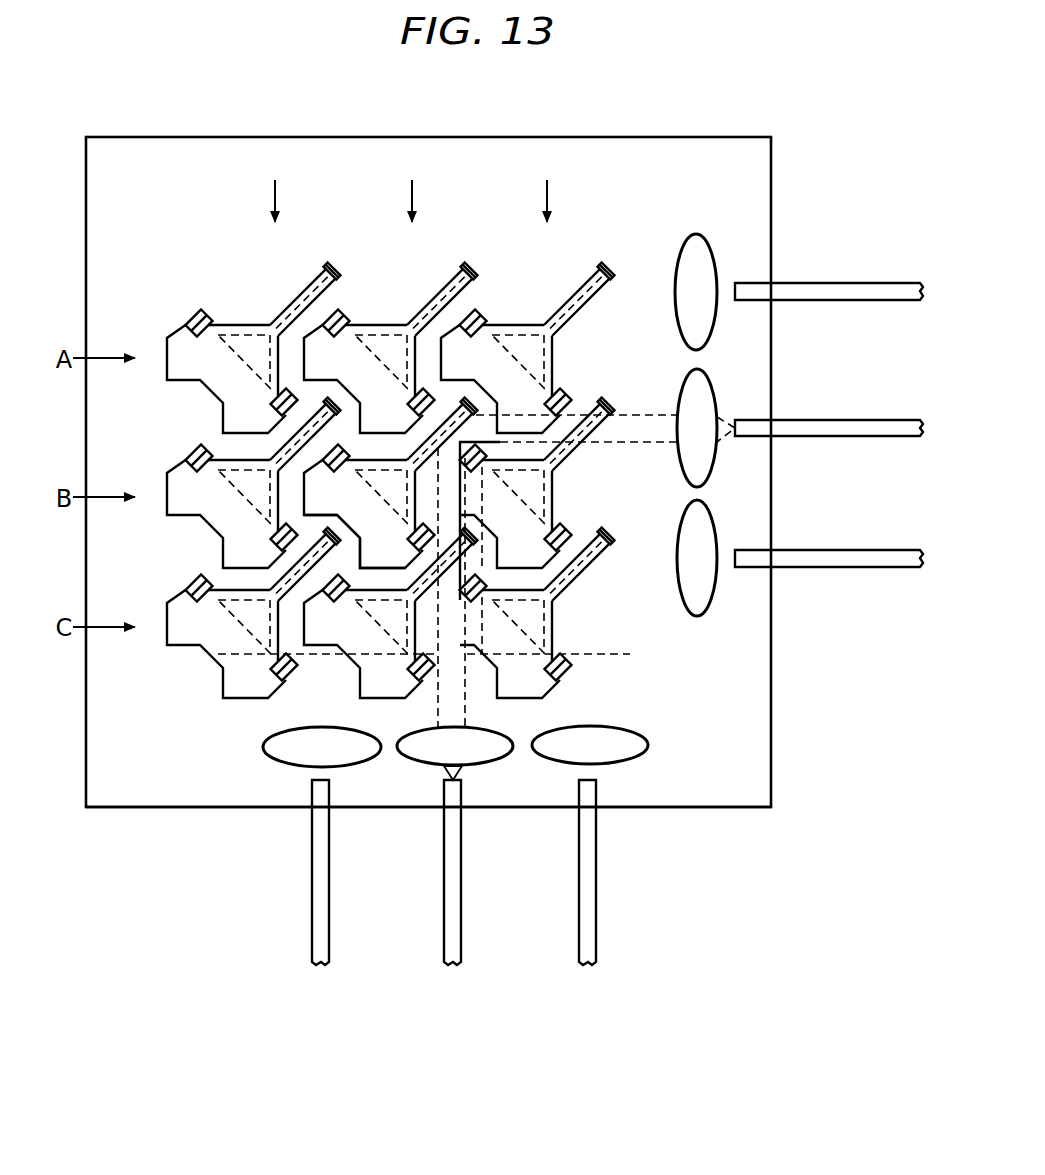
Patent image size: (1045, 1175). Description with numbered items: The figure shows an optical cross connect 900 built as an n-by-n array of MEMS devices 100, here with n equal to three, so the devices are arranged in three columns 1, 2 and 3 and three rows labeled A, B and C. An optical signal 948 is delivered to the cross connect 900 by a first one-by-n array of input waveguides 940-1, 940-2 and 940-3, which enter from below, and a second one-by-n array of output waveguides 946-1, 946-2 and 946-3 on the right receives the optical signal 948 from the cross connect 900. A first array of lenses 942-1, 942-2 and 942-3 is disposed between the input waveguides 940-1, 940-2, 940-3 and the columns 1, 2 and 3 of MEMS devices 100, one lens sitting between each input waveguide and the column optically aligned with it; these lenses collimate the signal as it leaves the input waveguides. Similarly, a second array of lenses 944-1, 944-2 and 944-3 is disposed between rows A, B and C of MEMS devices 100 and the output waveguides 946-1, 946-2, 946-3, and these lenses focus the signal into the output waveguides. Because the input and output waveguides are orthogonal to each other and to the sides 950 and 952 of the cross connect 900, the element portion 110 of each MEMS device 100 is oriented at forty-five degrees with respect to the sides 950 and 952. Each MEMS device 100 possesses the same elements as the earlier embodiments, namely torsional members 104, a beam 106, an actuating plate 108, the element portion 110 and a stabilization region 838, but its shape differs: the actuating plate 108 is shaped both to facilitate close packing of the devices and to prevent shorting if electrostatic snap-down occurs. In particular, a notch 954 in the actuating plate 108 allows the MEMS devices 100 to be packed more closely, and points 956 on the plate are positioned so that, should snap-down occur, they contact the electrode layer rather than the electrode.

The optical cross connect 900 is at (610, 157).
The MEMS device 100 is at (244, 324).
The torsional members 104 is at (205, 338).
The beam 106 is at (284, 337).
The actuating plate 108 is at (203, 383).
The element portion 110 is at (313, 282).
The stabilization region 838 is at (253, 345).
The notch 954 is at (338, 522).
The points 956 is at (375, 545).
The optical signal 948 is at (437, 712).
The input waveguide 940-1 is at (329, 912).
The input waveguide 940-2 is at (461, 919).
The input waveguide 940-3 is at (596, 922).
The lens 942-1 is at (263, 748).
The lens 942-2 is at (455, 746).
The lens 942-3 is at (650, 745).
The lens 944-1 is at (699, 233).
The lens 944-2 is at (697, 428).
The lens 944-3 is at (698, 617).
The output waveguide 946-1 is at (823, 283).
The output waveguide 946-2 is at (822, 420).
The output waveguide 946-3 is at (812, 550).
The side 950 is at (744, 808).
The side 952 is at (772, 180).
The column 1 is at (273, 187).
The column 2 is at (410, 187).
The column 3 is at (545, 187).